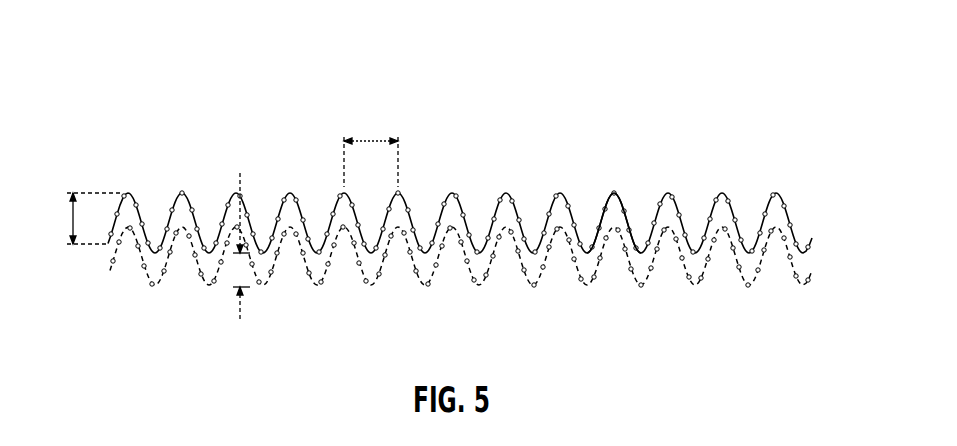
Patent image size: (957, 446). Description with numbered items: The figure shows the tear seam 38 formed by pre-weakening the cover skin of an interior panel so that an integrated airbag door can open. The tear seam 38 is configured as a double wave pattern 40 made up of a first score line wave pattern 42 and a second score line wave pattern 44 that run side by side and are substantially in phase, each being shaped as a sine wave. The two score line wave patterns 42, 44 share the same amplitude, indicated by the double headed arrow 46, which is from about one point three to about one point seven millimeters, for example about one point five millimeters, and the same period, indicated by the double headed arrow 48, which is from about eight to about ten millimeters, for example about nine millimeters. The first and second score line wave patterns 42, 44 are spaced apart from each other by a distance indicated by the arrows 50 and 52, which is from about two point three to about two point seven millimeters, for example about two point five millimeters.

The tear seam 38 is at (489, 233).
The double wave pattern 40 is at (796, 198).
The first score line wave pattern 42 is at (750, 287).
The second score line wave pattern 44 is at (615, 195).
The amplitude 46 is at (73, 218).
The period 48 is at (370, 138).
The spacing distance arrow 50 is at (240, 303).
The spacing distance arrow 52 is at (240, 183).